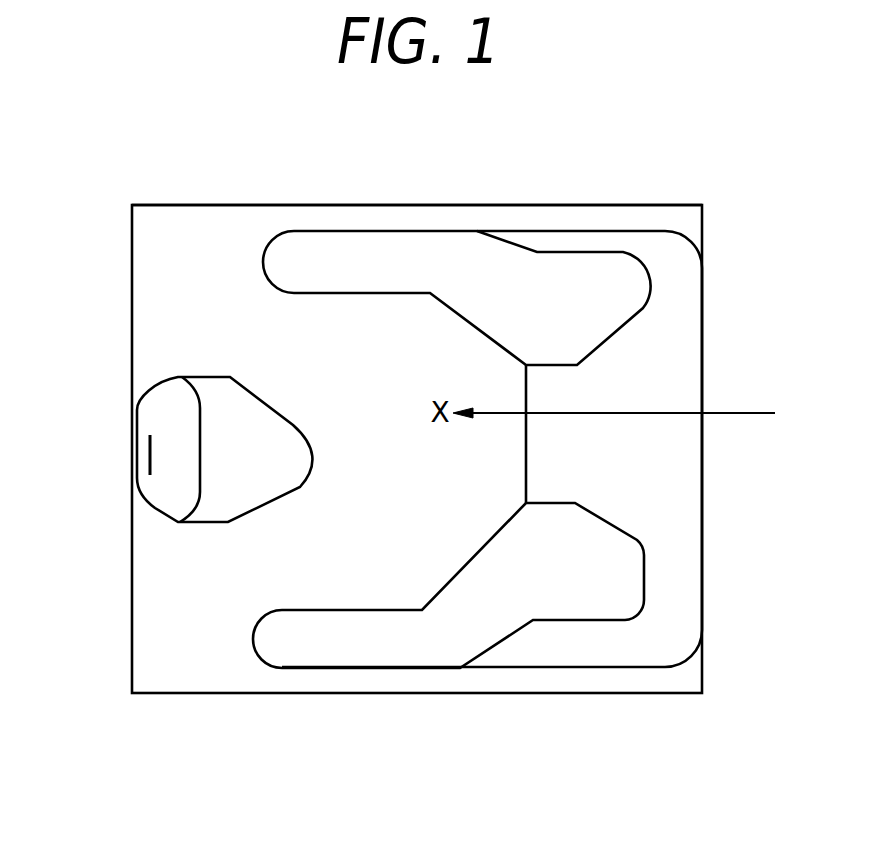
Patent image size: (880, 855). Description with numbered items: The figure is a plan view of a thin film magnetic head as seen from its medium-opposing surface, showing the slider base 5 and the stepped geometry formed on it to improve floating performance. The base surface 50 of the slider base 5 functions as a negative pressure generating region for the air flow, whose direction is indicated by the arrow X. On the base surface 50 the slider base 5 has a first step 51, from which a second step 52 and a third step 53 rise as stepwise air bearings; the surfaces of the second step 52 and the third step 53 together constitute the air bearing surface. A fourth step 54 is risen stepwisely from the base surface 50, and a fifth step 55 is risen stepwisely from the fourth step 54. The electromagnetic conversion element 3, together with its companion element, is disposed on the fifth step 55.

The slider base 5 is at (235, 205).
The base surface 50 is at (297, 563).
The first step 51 is at (655, 440).
The second step 52 is at (427, 253).
The third step 53 is at (436, 627).
The fourth step 54 is at (250, 420).
The fifth step 55 is at (178, 488).
The electromagnetic conversion element 3 is at (148, 462).